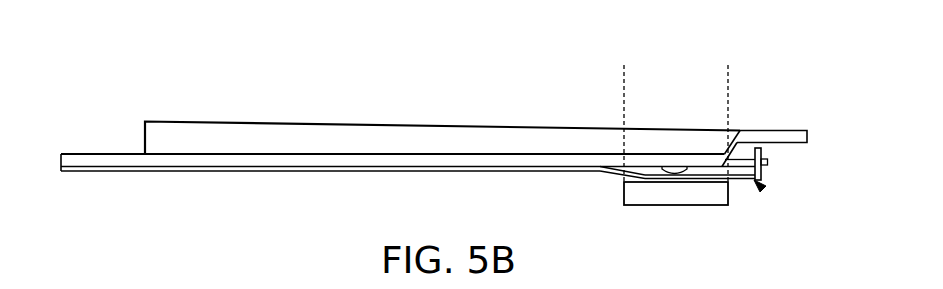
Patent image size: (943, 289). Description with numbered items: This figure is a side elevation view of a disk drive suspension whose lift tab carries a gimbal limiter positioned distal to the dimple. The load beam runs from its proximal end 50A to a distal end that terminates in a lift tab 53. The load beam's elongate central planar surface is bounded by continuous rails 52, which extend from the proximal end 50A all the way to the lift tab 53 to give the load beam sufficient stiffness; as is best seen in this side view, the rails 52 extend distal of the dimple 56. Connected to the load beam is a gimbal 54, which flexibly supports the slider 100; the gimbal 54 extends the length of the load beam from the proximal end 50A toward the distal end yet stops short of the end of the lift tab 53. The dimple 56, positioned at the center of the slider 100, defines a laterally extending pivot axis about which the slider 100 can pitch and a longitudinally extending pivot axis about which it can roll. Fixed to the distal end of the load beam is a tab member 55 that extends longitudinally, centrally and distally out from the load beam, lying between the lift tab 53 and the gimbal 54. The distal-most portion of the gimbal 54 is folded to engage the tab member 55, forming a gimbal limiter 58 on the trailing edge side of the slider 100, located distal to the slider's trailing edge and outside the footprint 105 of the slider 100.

The proximal end 50A is at (106, 153).
The rails 52 is at (309, 121).
The lift tab 53 is at (792, 132).
The gimbal 54 is at (317, 173).
The tab member 55 is at (770, 164).
The dimple 56 is at (660, 177).
The gimbal limiter 58 is at (762, 192).
The slider 100 is at (676, 206).
The footprint 105 is at (730, 88).